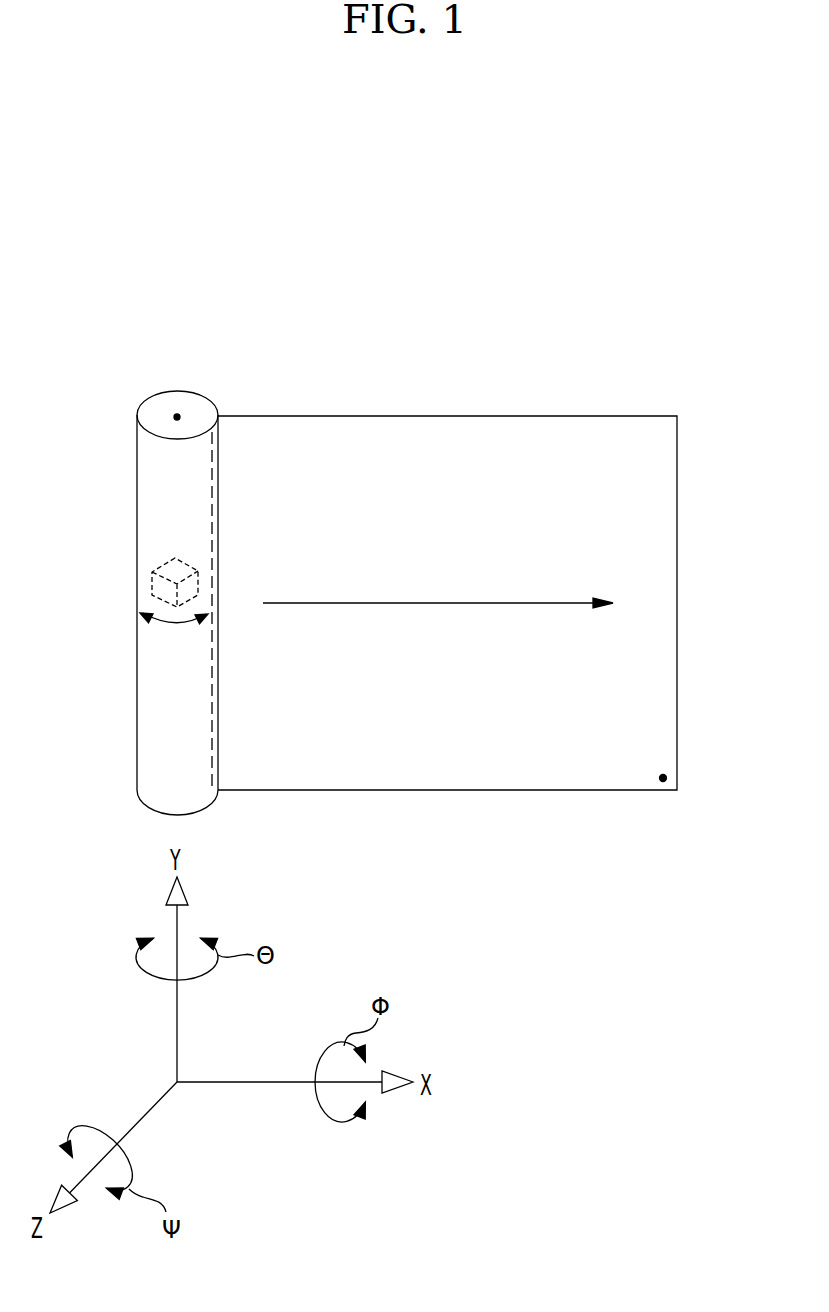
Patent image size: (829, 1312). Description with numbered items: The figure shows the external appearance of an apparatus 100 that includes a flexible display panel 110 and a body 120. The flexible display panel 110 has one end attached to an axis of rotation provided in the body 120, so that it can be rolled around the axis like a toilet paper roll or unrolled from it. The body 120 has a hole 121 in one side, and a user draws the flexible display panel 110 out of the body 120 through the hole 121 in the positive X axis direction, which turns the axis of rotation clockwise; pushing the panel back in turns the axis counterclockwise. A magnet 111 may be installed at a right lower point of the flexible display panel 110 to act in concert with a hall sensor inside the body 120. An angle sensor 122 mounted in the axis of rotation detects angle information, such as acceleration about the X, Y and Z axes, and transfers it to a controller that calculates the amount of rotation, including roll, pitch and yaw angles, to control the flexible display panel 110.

The apparatus 100 is at (641, 350).
The flexible display panel 110 is at (425, 416).
The magnet 111 is at (668, 778).
The body 120 is at (148, 487).
The hole 121 is at (217, 416).
The angle sensor 122 is at (150, 585).